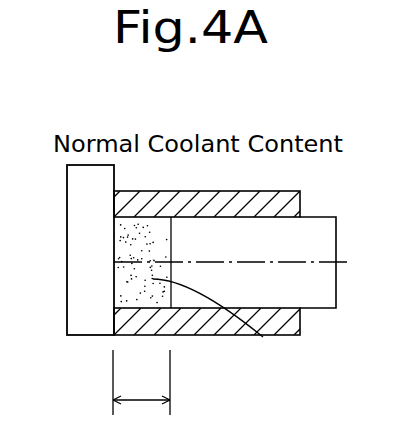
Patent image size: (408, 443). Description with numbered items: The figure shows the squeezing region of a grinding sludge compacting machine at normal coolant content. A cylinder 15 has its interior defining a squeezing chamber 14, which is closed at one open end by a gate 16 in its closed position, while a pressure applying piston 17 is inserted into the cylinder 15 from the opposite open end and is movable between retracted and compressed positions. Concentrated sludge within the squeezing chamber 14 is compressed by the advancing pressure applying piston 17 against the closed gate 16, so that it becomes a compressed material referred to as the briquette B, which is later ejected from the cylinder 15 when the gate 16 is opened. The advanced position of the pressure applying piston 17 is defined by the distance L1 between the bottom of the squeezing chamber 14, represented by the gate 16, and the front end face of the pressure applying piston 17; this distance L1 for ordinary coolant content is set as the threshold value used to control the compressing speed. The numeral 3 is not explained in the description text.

The gate 16 is at (88, 223).
The pressure applying piston 17 is at (320, 241).
The squeezing chamber 14 is at (138, 308).
The cylinder 15 is at (222, 320).
The briquette B is at (267, 338).
The heat pipe 3 is at (264, 346).
The distance L1 is at (141, 382).